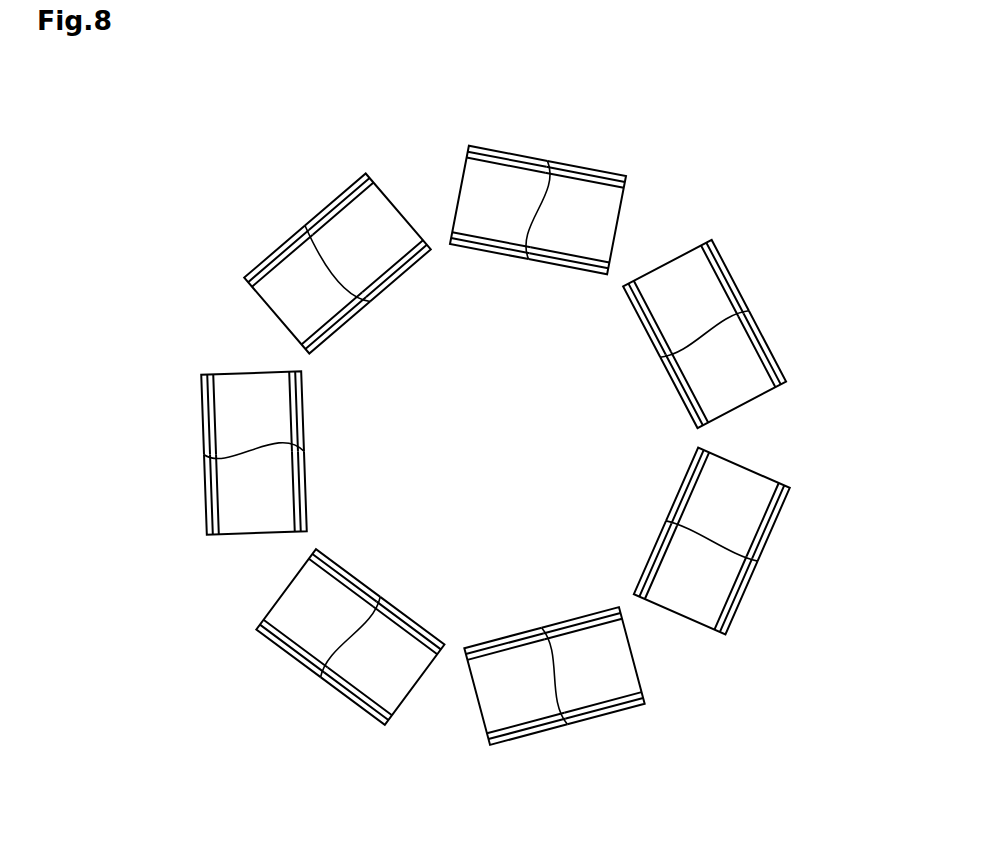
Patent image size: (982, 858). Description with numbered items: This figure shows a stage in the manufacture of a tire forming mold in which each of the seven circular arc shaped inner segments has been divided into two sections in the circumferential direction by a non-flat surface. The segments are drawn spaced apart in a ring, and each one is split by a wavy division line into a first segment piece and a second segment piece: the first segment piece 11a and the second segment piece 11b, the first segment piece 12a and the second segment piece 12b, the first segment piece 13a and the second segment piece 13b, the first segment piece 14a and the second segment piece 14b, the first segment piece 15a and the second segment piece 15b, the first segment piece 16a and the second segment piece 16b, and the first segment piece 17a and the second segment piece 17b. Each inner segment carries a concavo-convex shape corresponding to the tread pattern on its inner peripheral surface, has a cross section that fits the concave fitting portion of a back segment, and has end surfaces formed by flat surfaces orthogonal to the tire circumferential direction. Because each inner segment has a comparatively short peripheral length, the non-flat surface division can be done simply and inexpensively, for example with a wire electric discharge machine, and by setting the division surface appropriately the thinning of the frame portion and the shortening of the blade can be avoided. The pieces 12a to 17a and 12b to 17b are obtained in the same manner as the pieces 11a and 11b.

The first segment piece 11a is at (290, 280).
The second segment piece 11b is at (362, 217).
The first segment piece 12a is at (503, 188).
The second segment piece 12b is at (603, 200).
The first segment piece 13a is at (710, 302).
The second segment piece 13b is at (745, 385).
The first segment piece 14a is at (753, 525).
The second segment piece 14b is at (713, 603).
The first segment piece 15a is at (613, 690).
The second segment piece 15b is at (503, 720).
The first segment piece 16a is at (390, 697).
The second segment piece 16b is at (293, 615).
The first segment piece 17a is at (233, 512).
The second segment piece 17b is at (226, 390).